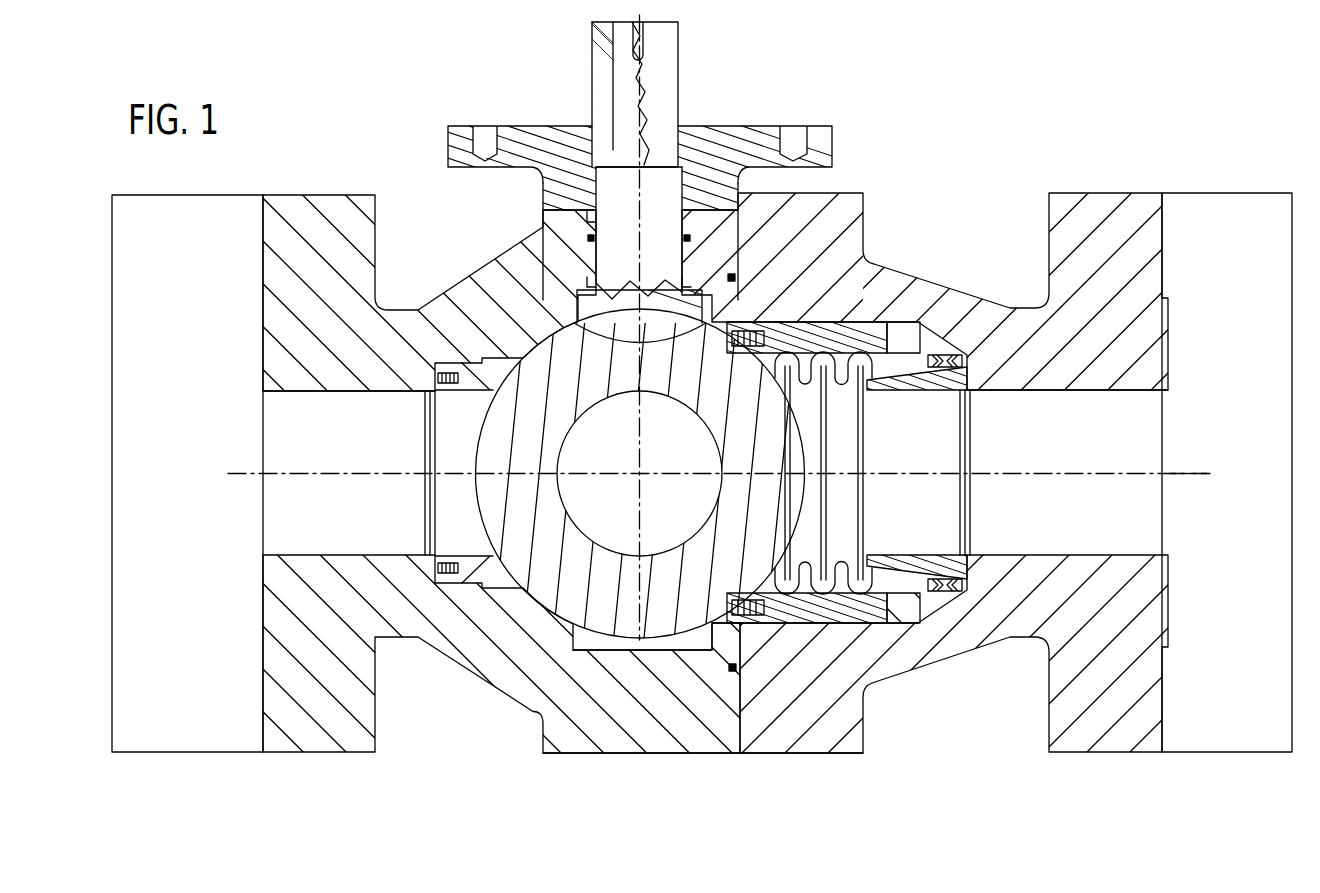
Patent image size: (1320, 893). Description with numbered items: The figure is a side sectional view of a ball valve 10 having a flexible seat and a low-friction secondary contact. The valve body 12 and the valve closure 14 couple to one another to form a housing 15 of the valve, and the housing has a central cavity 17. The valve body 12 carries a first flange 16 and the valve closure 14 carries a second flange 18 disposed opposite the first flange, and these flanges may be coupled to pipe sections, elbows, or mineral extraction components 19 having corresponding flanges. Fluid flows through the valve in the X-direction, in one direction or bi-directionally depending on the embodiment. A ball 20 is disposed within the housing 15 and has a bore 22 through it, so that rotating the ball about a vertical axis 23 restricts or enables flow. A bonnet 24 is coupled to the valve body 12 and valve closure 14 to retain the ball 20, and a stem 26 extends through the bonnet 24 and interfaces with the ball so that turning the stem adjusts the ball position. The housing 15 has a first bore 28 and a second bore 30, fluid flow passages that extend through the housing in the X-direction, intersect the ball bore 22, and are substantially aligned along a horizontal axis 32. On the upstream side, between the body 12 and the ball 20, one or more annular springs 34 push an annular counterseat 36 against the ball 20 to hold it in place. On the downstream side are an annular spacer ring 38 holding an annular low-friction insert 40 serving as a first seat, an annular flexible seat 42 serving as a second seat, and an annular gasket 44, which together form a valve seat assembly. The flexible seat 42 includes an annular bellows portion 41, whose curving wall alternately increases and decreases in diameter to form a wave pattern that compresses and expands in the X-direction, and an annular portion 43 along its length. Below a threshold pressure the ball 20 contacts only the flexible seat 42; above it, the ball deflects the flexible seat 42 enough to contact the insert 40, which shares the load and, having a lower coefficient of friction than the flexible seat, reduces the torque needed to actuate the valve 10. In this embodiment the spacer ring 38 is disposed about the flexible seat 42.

The ball valve 10 is at (1044, 82).
The valve body 12 is at (297, 718).
The valve closure 14 is at (1138, 715).
The housing 15 is at (826, 766).
The first flange 16 is at (283, 628).
The central cavity 17 is at (605, 645).
The second flange 18 is at (1143, 630).
The mineral extraction components 19 is at (190, 195).
The ball 20 is at (547, 590).
The bore 22 is at (606, 461).
The vertical axis 23 is at (640, 218).
The bonnet 24 is at (540, 130).
The stem 26 is at (680, 42).
The first bore 28 is at (329, 461).
The second bore 30 is at (1125, 461).
The horizontal axis 32 is at (1190, 473).
The annular springs 34 is at (448, 383).
The annular counterseat 36 is at (487, 373).
The annular spacer ring 38 is at (878, 325).
The annular low-friction insert 40 is at (750, 340).
The annular bellows portion 41 is at (808, 603).
The annular flexible seat 42 is at (952, 380).
The annular portion 43 is at (907, 578).
The annular gasket 44 is at (960, 356).